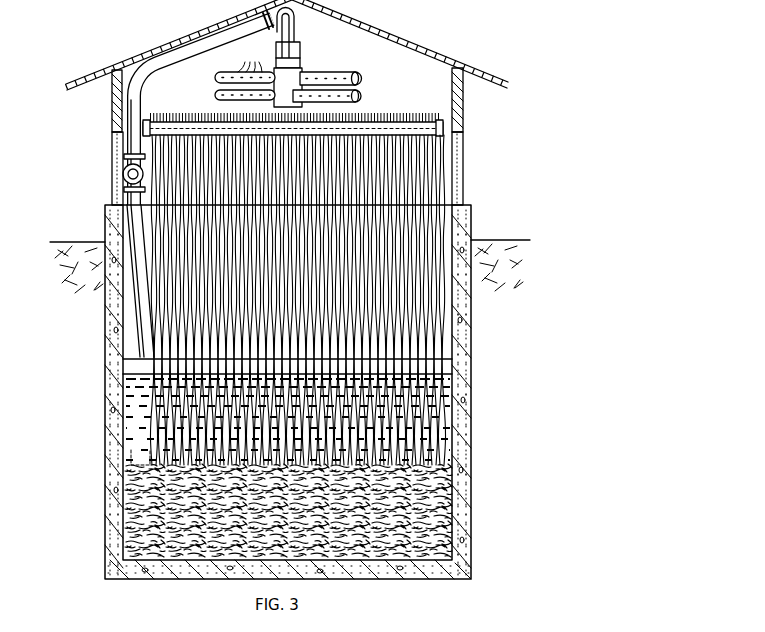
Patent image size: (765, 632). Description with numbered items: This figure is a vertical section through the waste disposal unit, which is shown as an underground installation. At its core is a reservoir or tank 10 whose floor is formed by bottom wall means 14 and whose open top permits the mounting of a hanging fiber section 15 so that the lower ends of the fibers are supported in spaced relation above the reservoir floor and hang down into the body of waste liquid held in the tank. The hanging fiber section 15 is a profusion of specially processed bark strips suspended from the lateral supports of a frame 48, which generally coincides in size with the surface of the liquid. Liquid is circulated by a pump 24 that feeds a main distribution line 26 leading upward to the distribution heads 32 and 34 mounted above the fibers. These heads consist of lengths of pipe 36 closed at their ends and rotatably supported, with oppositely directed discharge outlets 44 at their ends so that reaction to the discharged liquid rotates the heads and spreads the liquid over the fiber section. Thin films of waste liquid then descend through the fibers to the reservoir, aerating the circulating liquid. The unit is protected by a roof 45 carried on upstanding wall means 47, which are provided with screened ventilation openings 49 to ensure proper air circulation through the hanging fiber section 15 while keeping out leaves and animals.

The reservoir or tank 10 is at (107, 522).
The bottom wall means 14 is at (395, 570).
The hanging fiber section 15 is at (423, 233).
The pump 24 is at (130, 455).
The main distribution line 26 is at (143, 338).
The distribution head 32 is at (214, 76).
The distribution head 34 is at (362, 97).
The lengths of pipe 36 is at (317, 77).
The discharge outlets 44 is at (250, 59).
The roof 45 is at (187, 38).
The upstanding wall means 47 is at (112, 100).
The frame 48 is at (443, 128).
The ventilation openings 49 is at (122, 176).